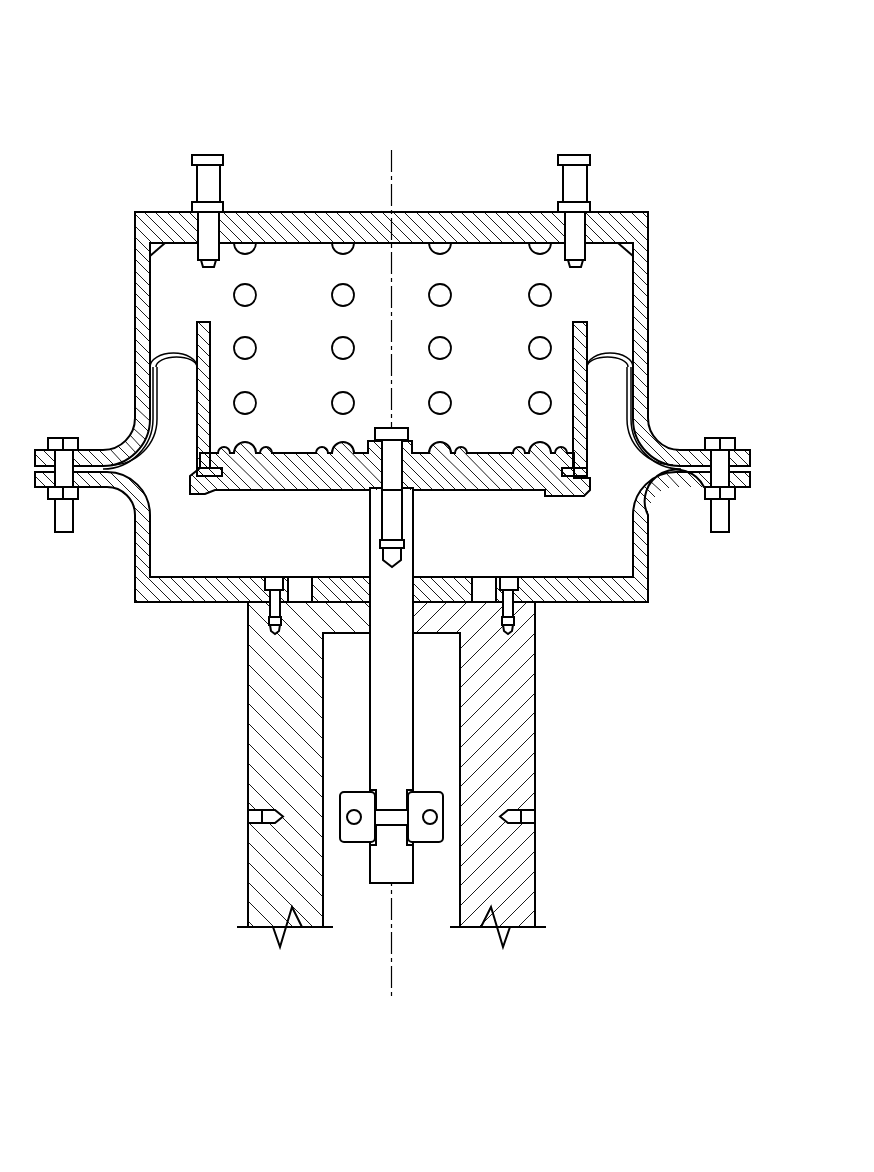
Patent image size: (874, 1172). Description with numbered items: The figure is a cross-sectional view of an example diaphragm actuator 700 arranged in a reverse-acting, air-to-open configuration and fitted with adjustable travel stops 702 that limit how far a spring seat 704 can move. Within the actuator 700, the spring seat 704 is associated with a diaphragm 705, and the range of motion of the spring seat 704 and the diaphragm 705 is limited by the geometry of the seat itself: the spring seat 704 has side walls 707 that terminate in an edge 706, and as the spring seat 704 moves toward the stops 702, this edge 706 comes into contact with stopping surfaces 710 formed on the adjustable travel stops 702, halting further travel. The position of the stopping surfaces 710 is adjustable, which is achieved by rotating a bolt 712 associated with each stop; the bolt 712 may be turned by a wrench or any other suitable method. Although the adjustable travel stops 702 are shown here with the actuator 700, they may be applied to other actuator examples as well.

The diaphragm actuator 700 is at (128, 42).
The adjustable travel stops 702 is at (205, 230).
The spring seat 704 is at (243, 465).
The diaphragm 705 is at (590, 356).
The edge 706 is at (201, 320).
The side walls 707 is at (200, 375).
The stopping surfaces 710 is at (200, 275).
The bolt 712 is at (212, 153).